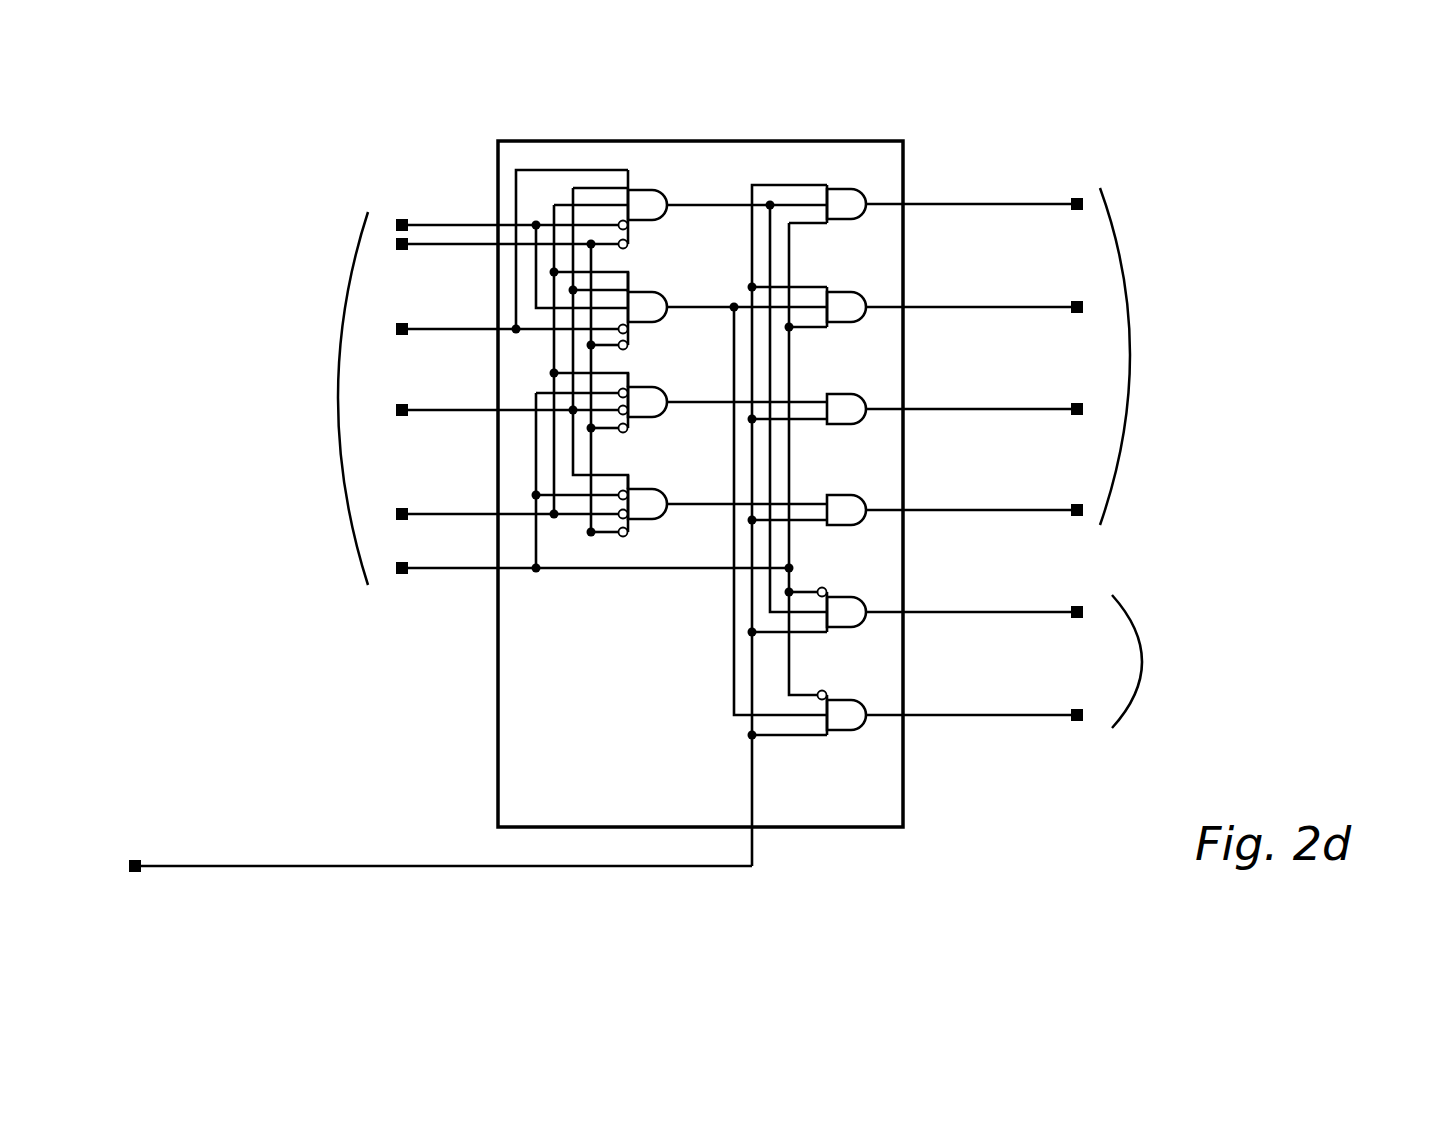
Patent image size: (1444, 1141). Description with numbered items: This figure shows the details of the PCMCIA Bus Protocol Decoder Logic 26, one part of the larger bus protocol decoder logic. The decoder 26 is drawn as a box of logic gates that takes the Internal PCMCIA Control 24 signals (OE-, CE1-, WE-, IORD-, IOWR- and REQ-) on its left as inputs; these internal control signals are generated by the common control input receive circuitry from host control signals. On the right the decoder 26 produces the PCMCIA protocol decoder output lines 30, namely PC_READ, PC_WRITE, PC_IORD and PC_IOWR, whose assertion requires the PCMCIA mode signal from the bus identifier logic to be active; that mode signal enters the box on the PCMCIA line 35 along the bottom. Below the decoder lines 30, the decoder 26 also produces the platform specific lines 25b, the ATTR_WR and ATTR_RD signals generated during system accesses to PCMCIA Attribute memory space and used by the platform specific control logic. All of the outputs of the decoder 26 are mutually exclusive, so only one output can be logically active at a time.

The Internal PCMCIA Control 24 is at (338, 397).
The PCMCIA Bus Protocol Decoder Logic 26 is at (850, 827).
The PCMCIA output decoder signals 30 is at (1130, 353).
The PCMCIA protocol decoder platform specific lines 25b is at (1142, 662).
The PCMCIA signal line 35 is at (300, 866).